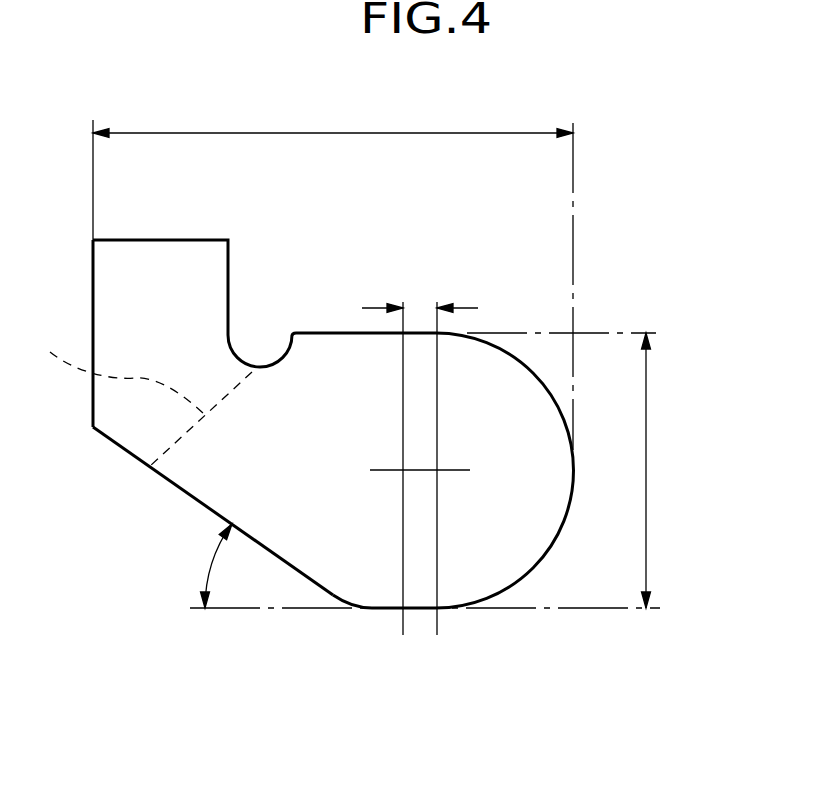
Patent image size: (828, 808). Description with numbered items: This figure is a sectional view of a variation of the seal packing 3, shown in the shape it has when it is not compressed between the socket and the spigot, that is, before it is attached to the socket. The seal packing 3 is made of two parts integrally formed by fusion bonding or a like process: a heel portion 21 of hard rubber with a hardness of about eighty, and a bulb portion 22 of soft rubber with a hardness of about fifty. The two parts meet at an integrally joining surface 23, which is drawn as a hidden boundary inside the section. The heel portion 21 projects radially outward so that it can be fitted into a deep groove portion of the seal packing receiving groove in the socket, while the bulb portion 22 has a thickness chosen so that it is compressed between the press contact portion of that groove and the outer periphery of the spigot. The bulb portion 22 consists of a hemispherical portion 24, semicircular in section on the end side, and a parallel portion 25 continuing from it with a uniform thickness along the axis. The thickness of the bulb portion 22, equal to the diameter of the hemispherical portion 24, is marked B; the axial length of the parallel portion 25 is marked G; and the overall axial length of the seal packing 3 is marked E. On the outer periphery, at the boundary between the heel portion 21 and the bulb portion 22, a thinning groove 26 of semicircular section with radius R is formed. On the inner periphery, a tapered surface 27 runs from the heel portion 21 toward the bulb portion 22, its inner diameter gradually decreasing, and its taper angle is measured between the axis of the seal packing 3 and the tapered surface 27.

The seal packing 3 is at (123, 475).
The heel portion 21 is at (143, 256).
The bulb portion 22 is at (333, 388).
The integrally joining surface 23 is at (143, 391).
The hemispherical portion 24 is at (528, 552).
The parallel portion 25 is at (420, 586).
The thinning groove 26 is at (240, 355).
The tapered surface 27 is at (170, 483).
The radius of thinning groove R is at (277, 359).
The length of parallel portion G is at (421, 307).
The length of seal packing E is at (493, 135).
The thickness of bulb portion B is at (648, 438).